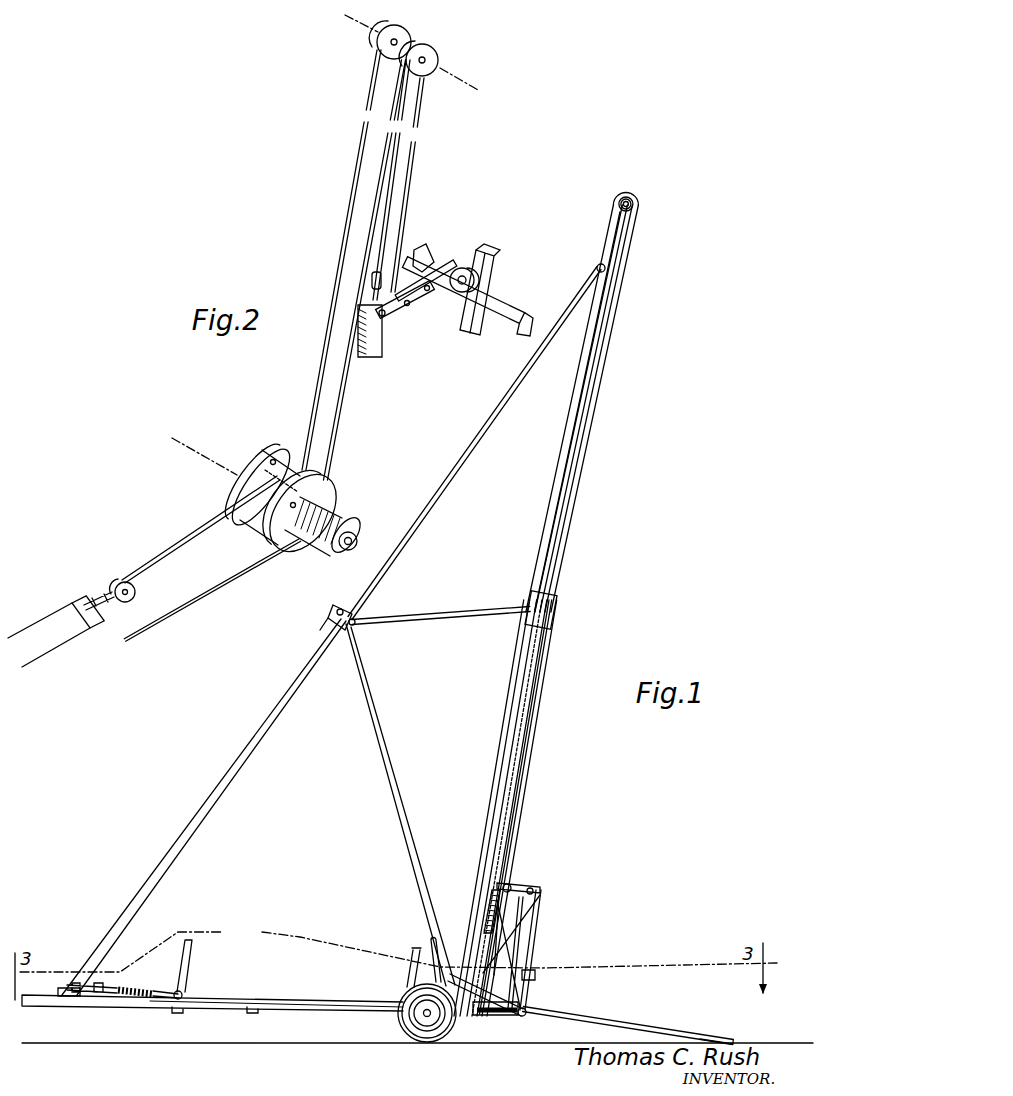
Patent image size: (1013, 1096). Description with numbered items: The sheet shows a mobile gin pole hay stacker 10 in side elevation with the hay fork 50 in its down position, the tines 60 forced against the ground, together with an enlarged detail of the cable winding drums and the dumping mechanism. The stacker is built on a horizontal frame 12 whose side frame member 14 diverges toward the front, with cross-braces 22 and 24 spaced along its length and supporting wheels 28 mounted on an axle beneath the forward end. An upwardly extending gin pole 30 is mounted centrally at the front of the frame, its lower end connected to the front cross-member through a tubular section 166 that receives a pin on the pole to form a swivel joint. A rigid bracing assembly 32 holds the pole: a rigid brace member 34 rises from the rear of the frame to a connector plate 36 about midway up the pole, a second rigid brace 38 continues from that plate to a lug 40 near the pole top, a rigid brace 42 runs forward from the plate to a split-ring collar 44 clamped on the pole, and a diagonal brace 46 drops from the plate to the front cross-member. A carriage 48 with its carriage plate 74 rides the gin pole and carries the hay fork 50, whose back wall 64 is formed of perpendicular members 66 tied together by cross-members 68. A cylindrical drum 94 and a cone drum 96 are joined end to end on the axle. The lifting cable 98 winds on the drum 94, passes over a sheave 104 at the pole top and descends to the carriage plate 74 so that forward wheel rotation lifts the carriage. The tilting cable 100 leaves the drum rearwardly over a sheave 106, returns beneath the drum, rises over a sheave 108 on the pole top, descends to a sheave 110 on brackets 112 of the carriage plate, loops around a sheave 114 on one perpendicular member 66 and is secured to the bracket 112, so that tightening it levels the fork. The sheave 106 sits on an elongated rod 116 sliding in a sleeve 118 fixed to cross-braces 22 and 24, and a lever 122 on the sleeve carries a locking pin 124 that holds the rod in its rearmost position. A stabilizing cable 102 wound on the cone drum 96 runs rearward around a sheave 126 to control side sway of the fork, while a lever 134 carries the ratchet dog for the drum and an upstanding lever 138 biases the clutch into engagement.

In FIG. 1, the mobile gin pole hay stacker 10 is at (570, 657).
In FIG. 1, the horizontal frame 12 is at (345, 992).
In FIG. 1, the side frame member 14 is at (317, 1008).
In FIG. 1, the cross-brace 22 is at (250, 1009).
In FIG. 1, the cross-brace 24 is at (174, 1010).
In FIG. 1, the supporting wheel 28 is at (417, 1038).
In FIG. 1, the gin pole 30 is at (497, 829).
In FIG. 1, the rigid bracing assembly 32 is at (318, 646).
In FIG. 1, the rigid brace member 34 is at (230, 792).
In FIG. 1, the connector plate 36 is at (356, 615).
In FIG. 1, the second rigid brace 38 is at (470, 435).
In FIG. 1, the lug 40 is at (599, 263).
In FIG. 1, the rigid brace 42 is at (440, 608).
In FIG. 1, the collar 44 is at (556, 606).
In FIG. 1, the diagonal brace 46 is at (396, 752).
In FIG. 1, the carriage 48 is at (542, 898).
In FIG. 1, the hay fork 50 is at (566, 998).
In FIG. 1, the tines 60 is at (700, 1031).
In FIG. 1, the back wall 64 is at (543, 941).
In FIG. 1, the perpendicular members 66 is at (536, 978).
In FIG. 1, the cross-members 68 is at (545, 913).
In FIG. 2, the carriage plate 74 is at (382, 342).
In FIG. 1, the carriage plate 74 is at (485, 930).
In FIG. 2, the cylindrical drum 94 is at (264, 447).
In FIG. 2, the cone drum 96 is at (349, 522).
In FIG. 2, the lifting cable 98 is at (393, 203).
In FIG. 1, the lifting cable 98 is at (545, 527).
In FIG. 2, the tilting cable 100 is at (423, 167).
In FIG. 1, the tilting cable 100 is at (537, 743).
In FIG. 2, the stabilizing cable 102 is at (182, 608).
In FIG. 2, the sheave 104 is at (401, 31).
In FIG. 2, the sheave 106 is at (119, 580).
In FIG. 2, the sheave 108 is at (432, 56).
In FIG. 1, the sheave 108 is at (632, 201).
In FIG. 2, the sheave 110 is at (396, 309).
In FIG. 2, the brackets 112 is at (428, 262).
In FIG. 2, the sheave 114 is at (464, 268).
In FIG. 2, the elongated rod 116 is at (90, 592).
In FIG. 2, the sleeve 118 is at (60, 640).
In FIG. 1, the lever 122 is at (194, 945).
In FIG. 1, the locking pin 124 is at (186, 992).
In FIG. 1, the sheave 126 is at (98, 984).
In FIG. 1, the lever 134 is at (413, 956).
In FIG. 1, the upstanding lever 138 is at (431, 936).
In FIG. 2, the tubular section 166 is at (512, 278).